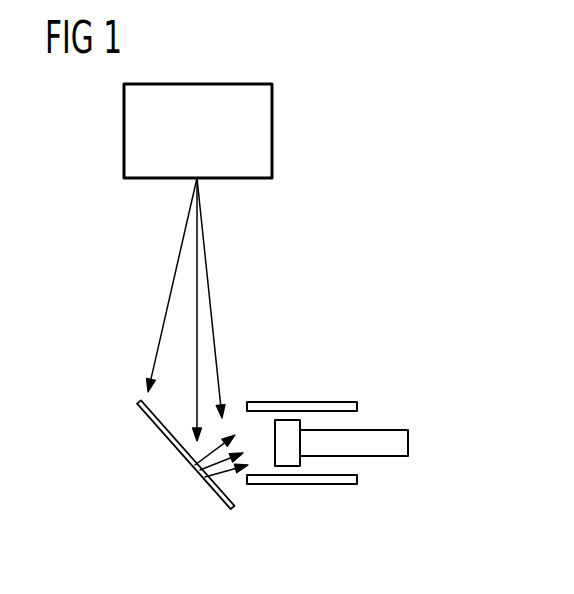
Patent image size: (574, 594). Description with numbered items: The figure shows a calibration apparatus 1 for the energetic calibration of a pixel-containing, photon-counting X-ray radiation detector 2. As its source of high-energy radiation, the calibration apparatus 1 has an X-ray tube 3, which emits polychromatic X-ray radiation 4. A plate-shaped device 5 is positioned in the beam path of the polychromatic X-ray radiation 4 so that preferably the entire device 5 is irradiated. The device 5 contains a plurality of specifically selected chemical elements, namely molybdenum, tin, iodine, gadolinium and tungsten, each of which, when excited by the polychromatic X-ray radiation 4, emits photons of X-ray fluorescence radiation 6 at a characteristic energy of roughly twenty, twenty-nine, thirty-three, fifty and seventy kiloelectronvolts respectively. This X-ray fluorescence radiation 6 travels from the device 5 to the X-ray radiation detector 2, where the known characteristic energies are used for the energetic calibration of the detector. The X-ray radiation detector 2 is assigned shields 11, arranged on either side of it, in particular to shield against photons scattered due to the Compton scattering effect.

The calibration apparatus 1 is at (386, 224).
The photon-counting X-ray radiation detector 2 is at (408, 440).
The X-ray tube 3 is at (273, 131).
The polychromatic X-ray radiation 4 is at (170, 285).
The device for energetic calibration 5 is at (173, 448).
The X-ray fluorescence radiation 6 is at (212, 475).
The shields 11 is at (300, 401).